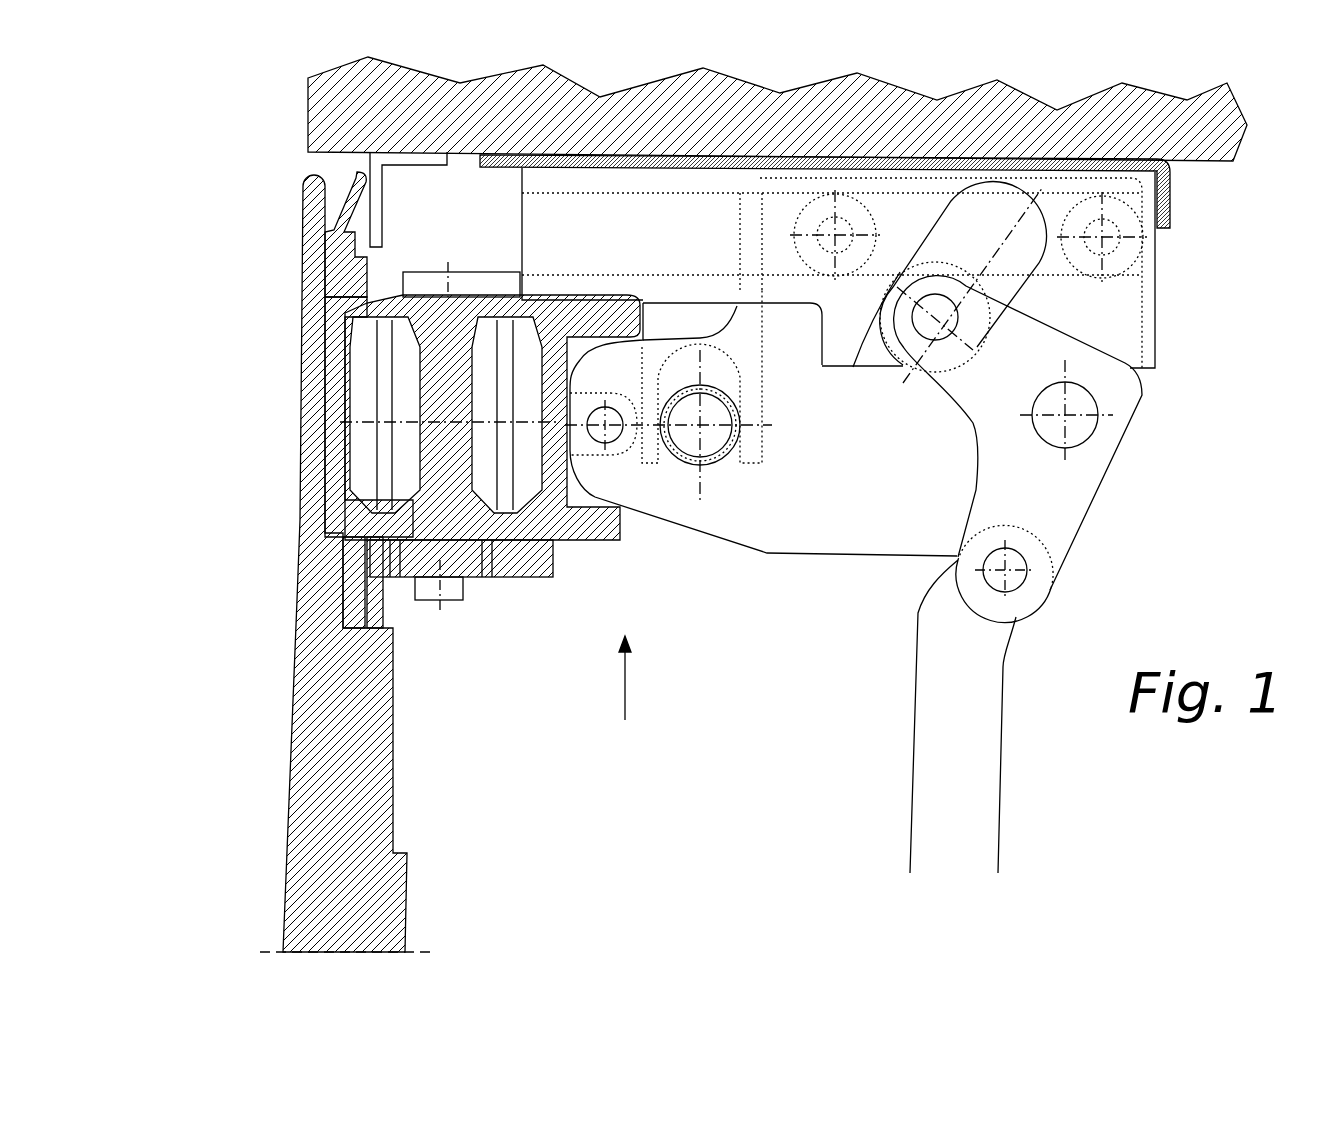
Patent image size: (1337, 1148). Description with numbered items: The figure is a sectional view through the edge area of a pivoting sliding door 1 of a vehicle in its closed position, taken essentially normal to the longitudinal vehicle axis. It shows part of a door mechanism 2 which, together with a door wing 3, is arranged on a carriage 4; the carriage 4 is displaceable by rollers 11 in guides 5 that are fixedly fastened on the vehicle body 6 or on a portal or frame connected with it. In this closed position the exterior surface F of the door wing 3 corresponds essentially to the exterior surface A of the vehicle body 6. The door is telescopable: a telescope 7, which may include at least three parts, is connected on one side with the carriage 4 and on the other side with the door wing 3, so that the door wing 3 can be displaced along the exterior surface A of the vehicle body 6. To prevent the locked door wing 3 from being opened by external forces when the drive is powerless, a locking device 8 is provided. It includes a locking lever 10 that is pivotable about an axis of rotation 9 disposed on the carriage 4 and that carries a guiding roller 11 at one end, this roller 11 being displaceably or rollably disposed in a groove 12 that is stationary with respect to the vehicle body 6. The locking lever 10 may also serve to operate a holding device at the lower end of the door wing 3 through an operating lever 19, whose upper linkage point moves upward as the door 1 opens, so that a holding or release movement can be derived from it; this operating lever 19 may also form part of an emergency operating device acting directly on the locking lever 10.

The exterior surface of the vehicle body A is at (302, 108).
The door 1 is at (222, 166).
The door mechanism 2 is at (618, 705).
The door wing 3 is at (322, 681).
The carriage 4 is at (862, 483).
The guides 5 is at (648, 254).
The vehicle body 6 is at (1200, 133).
The telescope 7 is at (580, 540).
The locking device 8 is at (1200, 383).
The axis of rotation 9 is at (1082, 432).
The locking lever 10 is at (1068, 509).
The roller 11 is at (950, 256).
The groove 12 is at (921, 240).
The operating lever 19 is at (975, 787).
The exterior surface of the door wing F is at (298, 370).